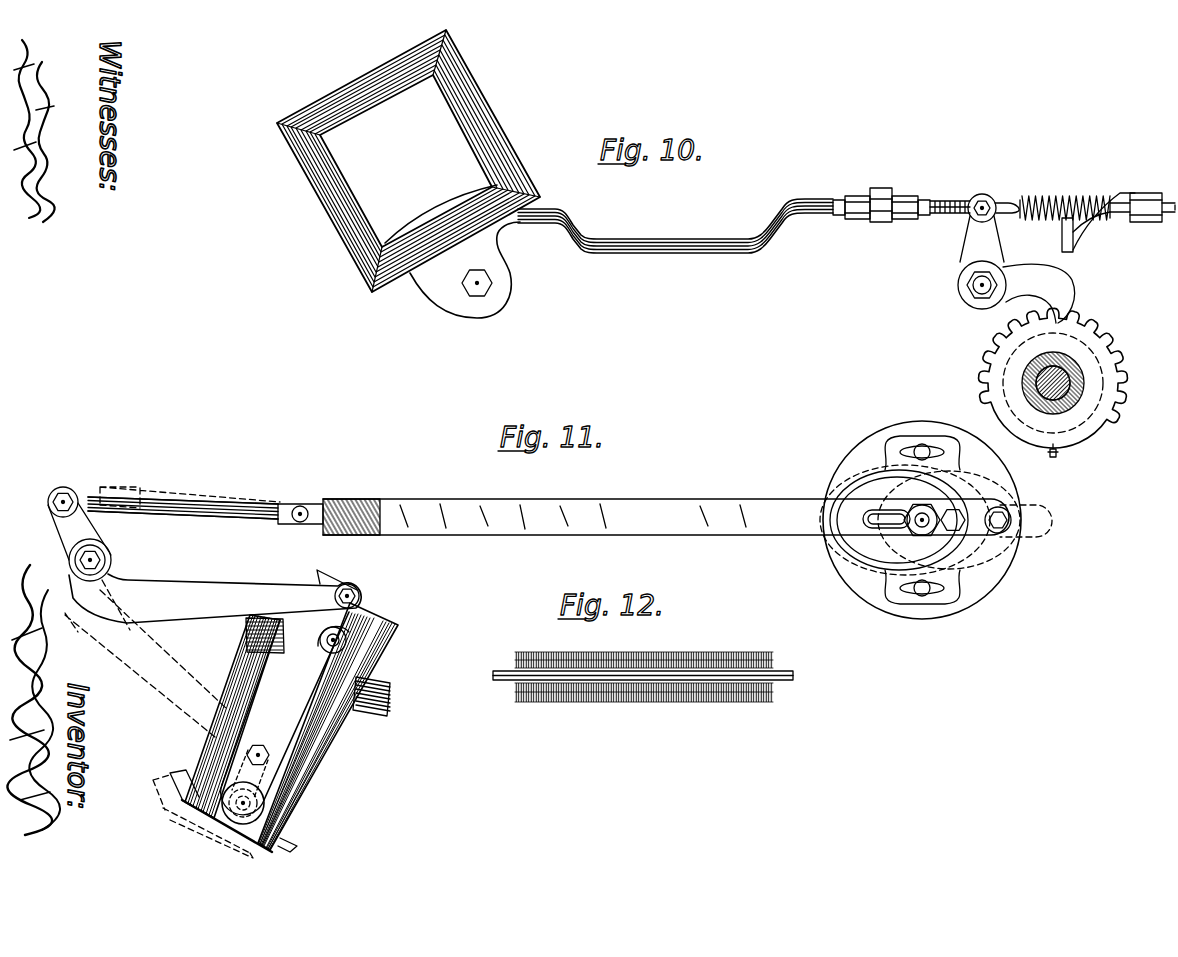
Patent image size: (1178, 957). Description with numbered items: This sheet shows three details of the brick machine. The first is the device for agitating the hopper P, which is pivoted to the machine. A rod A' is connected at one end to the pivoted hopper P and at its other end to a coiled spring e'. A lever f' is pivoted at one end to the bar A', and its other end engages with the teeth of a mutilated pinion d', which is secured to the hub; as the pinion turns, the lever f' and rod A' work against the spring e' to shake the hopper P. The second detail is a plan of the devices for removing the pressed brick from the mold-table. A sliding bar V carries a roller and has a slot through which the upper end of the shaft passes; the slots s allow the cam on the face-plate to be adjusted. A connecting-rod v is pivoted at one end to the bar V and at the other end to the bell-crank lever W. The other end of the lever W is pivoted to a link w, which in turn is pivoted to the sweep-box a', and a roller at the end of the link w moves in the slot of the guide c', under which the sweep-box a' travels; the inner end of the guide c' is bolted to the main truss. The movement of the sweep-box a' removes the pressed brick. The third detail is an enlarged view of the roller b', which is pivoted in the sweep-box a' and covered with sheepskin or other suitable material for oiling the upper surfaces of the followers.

In FIG. 10, the hopper P is at (338, 232).
In FIG. 10, the rod A' is at (744, 220).
In FIG. 10, the coiled spring e' is at (1097, 211).
In FIG. 10, the lever f' is at (1016, 258).
In FIG. 10, the mutilated pinion d' is at (1059, 382).
In FIG. 11, the sliding bar V is at (687, 520).
In FIG. 11, the slots s is at (940, 452).
In FIG. 11, the connecting-rod v is at (185, 515).
In FIG. 11, the bell-crank lever W is at (204, 620).
In FIG. 11, the link w is at (334, 632).
In FIG. 11, the sweep-box a' is at (388, 687).
In FIG. 11, the roller b' is at (285, 718).
In FIG. 12, the roller b' is at (643, 692).
In FIG. 11, the guide c' is at (328, 726).